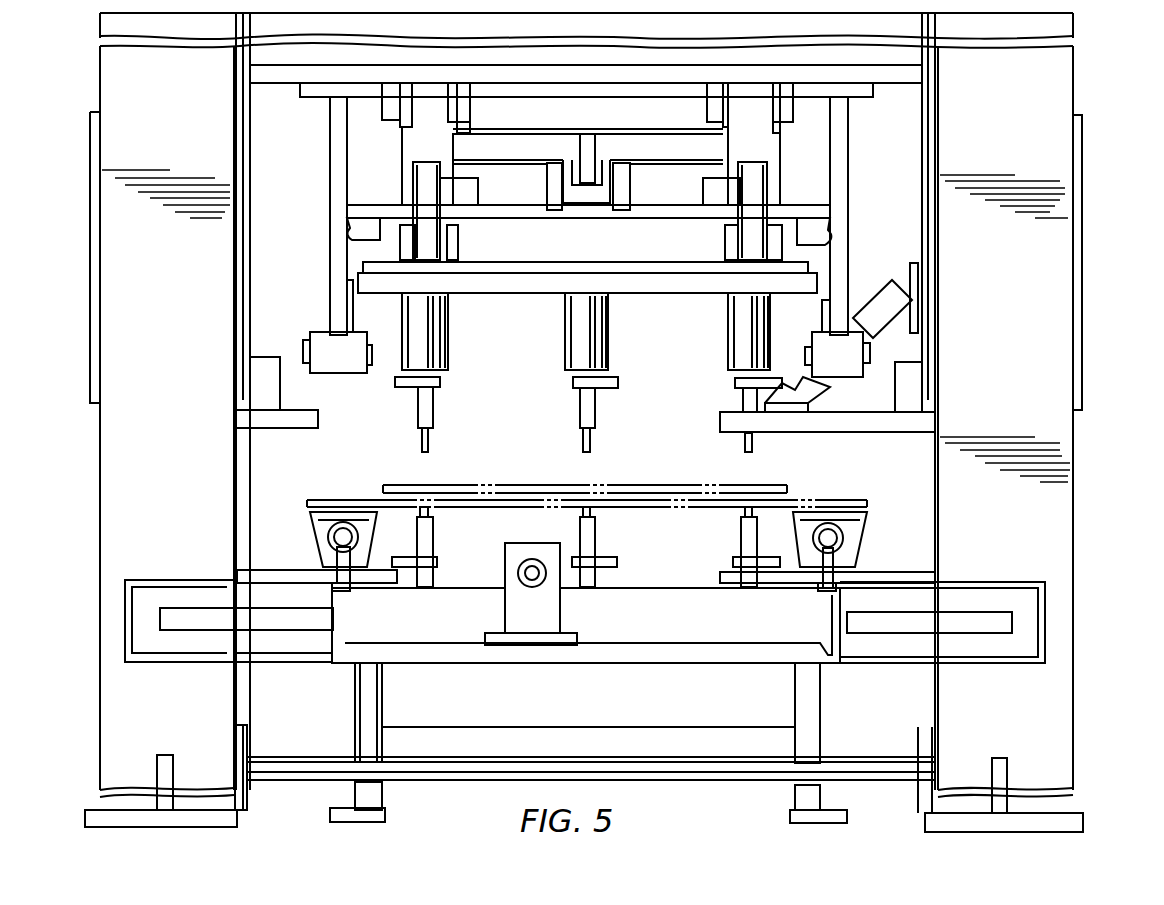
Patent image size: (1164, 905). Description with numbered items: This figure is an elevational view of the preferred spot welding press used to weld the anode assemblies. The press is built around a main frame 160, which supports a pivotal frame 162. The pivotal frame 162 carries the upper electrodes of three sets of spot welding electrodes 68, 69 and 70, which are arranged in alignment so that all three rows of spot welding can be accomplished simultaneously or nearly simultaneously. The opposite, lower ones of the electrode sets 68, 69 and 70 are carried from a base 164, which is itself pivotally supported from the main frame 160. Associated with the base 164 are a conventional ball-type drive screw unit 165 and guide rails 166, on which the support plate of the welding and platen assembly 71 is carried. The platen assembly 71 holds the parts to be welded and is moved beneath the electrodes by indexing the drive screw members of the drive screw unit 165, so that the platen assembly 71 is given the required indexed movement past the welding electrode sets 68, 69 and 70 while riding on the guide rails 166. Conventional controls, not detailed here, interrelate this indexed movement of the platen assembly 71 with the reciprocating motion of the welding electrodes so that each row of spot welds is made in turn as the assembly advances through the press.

The spot welding electrode set 68 is at (410, 484).
The spot welding electrode set 69 is at (602, 486).
The spot welding electrode set 70 is at (736, 487).
The platen assembly 71 is at (745, 497).
The main frame 160 is at (1083, 512).
The pivotal frame 162 is at (858, 190).
The base 164 is at (940, 570).
The ball-type drive screw unit 165 is at (503, 558).
The guide rails 166 is at (308, 538).